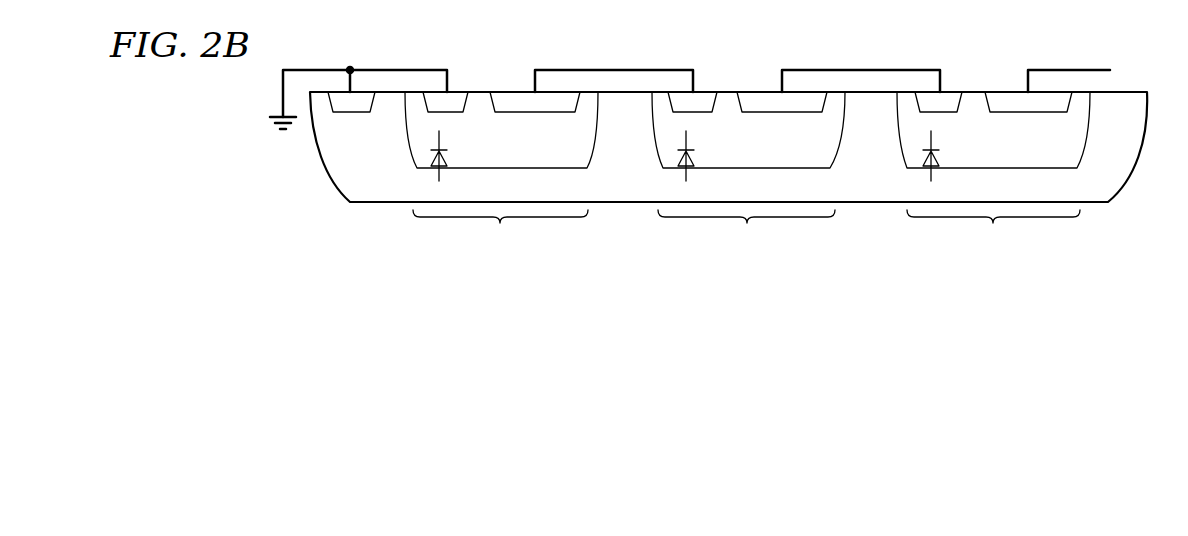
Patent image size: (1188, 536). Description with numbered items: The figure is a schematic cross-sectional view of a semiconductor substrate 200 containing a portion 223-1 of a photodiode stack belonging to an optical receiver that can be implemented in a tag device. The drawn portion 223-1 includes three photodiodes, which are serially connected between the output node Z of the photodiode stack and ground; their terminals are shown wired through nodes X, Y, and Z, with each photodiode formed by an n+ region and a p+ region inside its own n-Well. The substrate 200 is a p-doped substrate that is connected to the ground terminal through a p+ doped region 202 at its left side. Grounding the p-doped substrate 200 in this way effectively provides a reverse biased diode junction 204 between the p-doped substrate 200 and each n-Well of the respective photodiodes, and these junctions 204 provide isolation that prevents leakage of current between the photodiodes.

The portion of the photodiode stack 223-1 is at (247, 133).
The semiconductor substrate 200 is at (323, 163).
The p+ doped region 202 is at (350, 114).
The reverse biased diode junction 204 is at (432, 156).